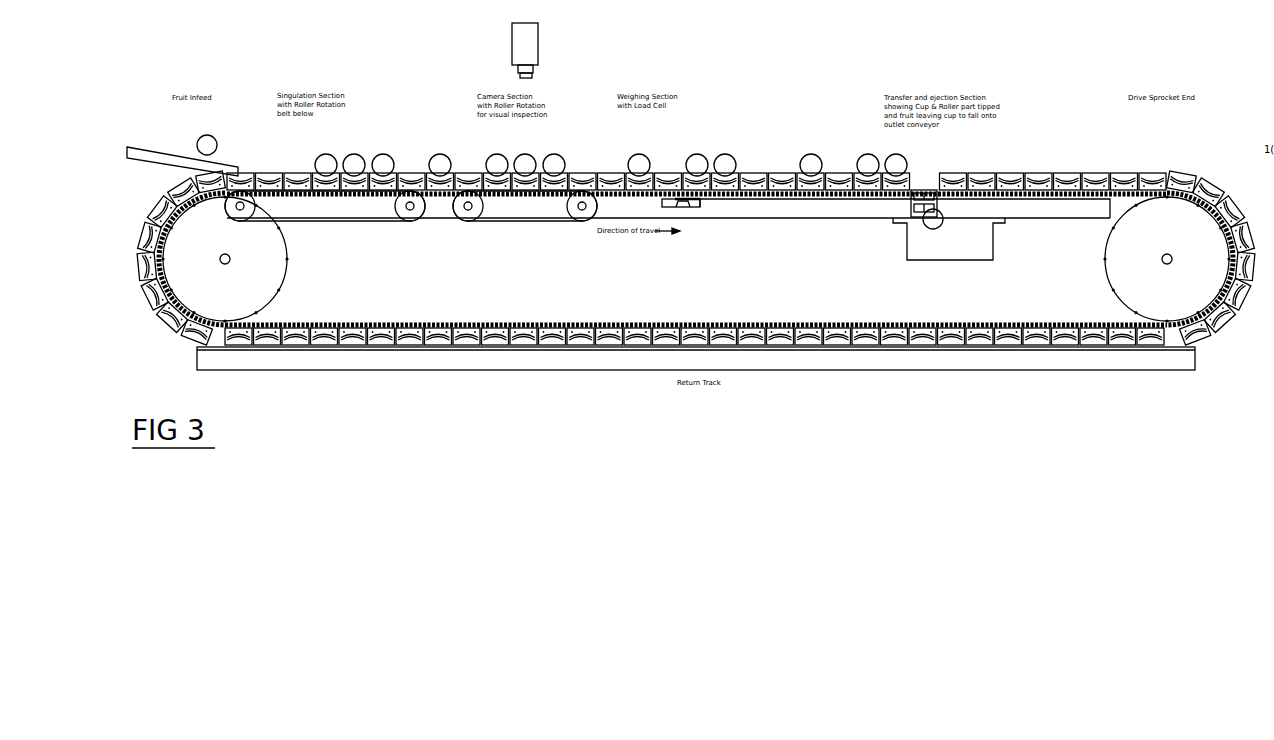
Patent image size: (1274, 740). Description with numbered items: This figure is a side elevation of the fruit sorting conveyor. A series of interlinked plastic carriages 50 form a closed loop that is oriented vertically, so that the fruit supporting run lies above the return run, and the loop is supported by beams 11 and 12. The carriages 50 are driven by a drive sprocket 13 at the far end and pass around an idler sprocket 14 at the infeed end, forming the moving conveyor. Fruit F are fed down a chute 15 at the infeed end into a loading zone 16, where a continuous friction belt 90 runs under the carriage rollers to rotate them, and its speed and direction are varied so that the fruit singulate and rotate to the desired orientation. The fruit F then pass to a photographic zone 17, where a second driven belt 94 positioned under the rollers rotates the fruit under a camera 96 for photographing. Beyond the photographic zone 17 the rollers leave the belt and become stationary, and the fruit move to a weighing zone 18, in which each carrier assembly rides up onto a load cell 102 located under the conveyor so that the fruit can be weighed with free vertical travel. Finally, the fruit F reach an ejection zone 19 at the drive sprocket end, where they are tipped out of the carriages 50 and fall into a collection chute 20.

The beam 11 is at (800, 213).
The beam 12 is at (805, 365).
The drive sprocket 13 is at (1120, 268).
The idler sprocket 14 is at (275, 272).
The chute 15 is at (148, 146).
The loading zone 16 is at (345, 135).
The photographic zone 17 is at (535, 150).
The weighing zone 18 is at (698, 145).
The ejection zone 19 is at (960, 160).
The collection chute 20 is at (1005, 240).
The carriage 50 is at (1033, 168).
The friction belt 90 is at (335, 222).
The driven belt 94 is at (518, 218).
The camera 96 is at (533, 42).
The load cell 102 is at (694, 212).
The fruit F is at (214, 138).